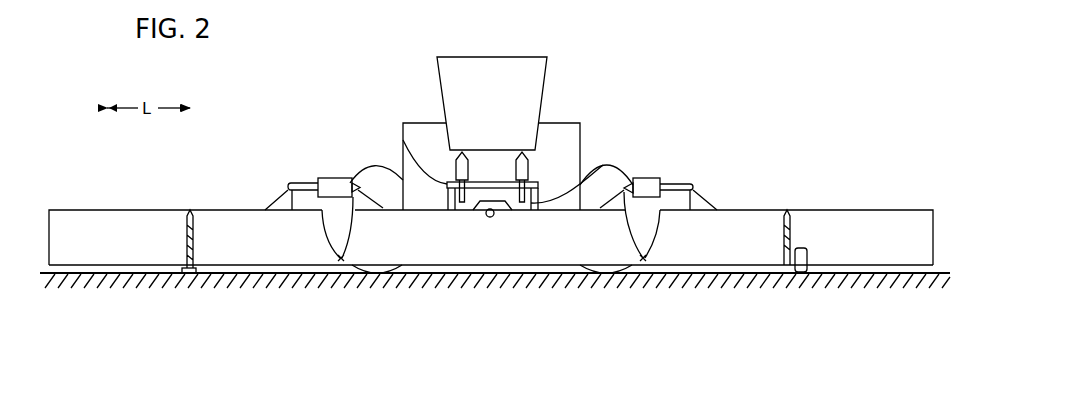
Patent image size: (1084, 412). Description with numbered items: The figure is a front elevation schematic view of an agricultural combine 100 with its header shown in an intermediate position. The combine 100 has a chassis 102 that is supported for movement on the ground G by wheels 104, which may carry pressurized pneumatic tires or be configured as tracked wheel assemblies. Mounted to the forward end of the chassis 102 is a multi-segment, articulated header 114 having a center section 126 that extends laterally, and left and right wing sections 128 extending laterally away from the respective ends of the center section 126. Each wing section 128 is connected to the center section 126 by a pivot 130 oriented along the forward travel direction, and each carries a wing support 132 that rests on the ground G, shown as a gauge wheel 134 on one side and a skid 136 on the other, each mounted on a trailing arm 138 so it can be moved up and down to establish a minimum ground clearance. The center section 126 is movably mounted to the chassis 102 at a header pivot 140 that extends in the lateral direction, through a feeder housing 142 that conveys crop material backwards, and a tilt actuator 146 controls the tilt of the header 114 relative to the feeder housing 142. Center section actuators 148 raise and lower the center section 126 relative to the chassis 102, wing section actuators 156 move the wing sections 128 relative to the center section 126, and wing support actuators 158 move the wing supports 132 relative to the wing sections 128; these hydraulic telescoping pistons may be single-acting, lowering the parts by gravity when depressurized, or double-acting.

The agricultural combine 100 is at (666, 87).
The chassis 102 is at (553, 127).
The wheels 104 is at (388, 171).
The header 114 is at (842, 207).
The center section 126 is at (577, 247).
The wing sections 128 is at (102, 257).
The pivot 130 is at (340, 260).
The wing support 132 is at (193, 207).
The gauge wheel 134 is at (803, 272).
The skid 136 is at (190, 275).
The trailing arm 138 is at (183, 262).
The header pivot 140 is at (403, 140).
The feeder housing 142 is at (597, 208).
The tilt actuator 146 is at (480, 206).
The center section actuators 148 is at (455, 167).
The wing section actuators 156 is at (320, 180).
The wing support actuators 158 is at (186, 224).
The ground G is at (917, 282).